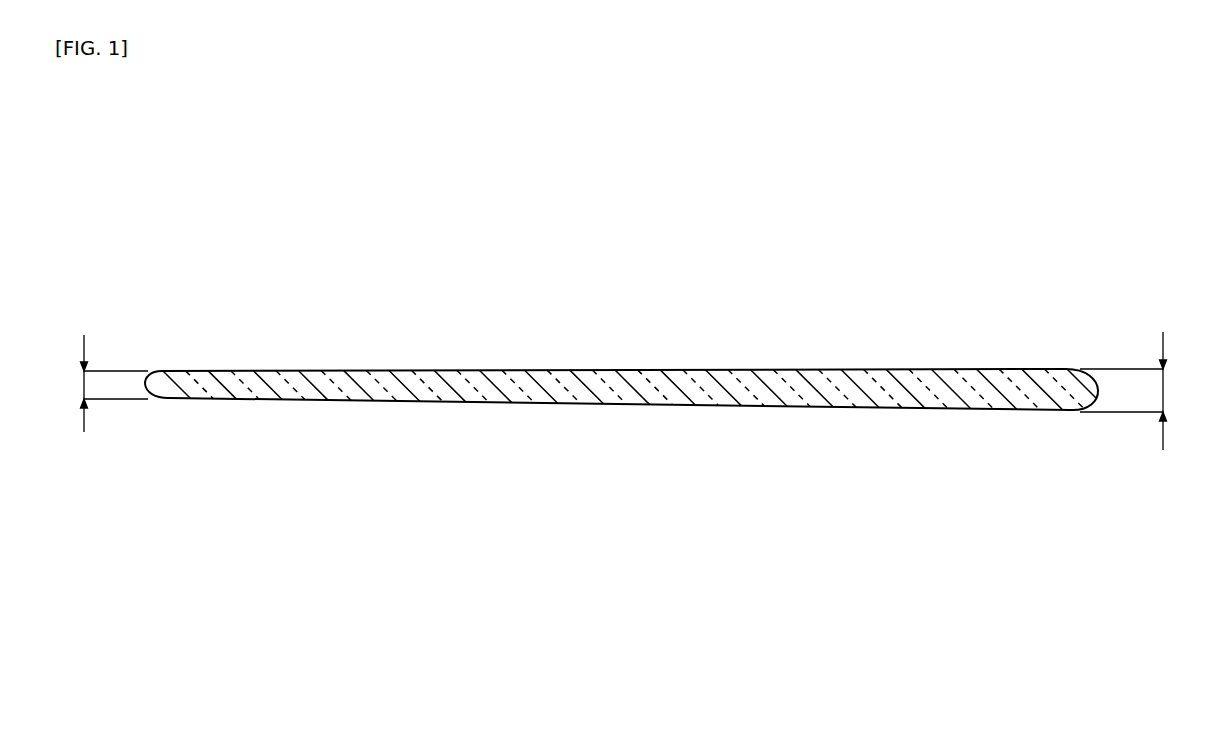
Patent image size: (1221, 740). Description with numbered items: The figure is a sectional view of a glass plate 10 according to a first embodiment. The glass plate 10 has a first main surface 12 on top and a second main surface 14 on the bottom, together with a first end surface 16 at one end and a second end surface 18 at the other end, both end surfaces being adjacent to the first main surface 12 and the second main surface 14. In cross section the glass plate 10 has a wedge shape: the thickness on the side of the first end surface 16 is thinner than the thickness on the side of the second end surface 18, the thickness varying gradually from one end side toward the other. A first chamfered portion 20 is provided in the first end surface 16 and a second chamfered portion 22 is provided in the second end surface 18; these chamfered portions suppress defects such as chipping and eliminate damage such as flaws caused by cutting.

The glass plate 10 is at (684, 289).
The first main surface 12 is at (628, 368).
The second main surface 14 is at (627, 407).
The first end surface 16 is at (146, 388).
The second end surface 18 is at (1099, 388).
The first chamfered portion 20 is at (155, 363).
The second chamfered portion 22 is at (1079, 363).